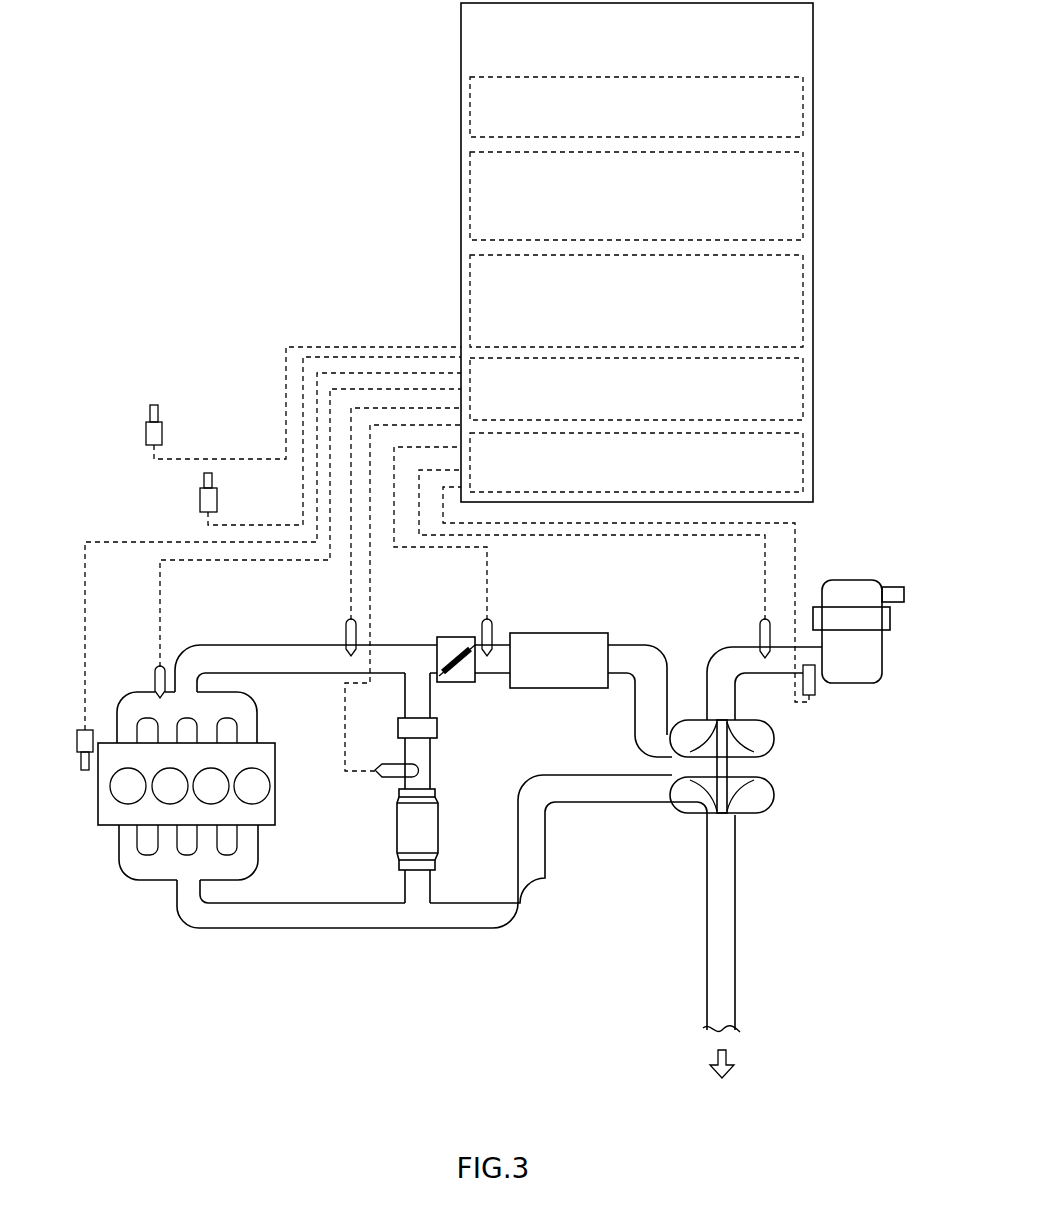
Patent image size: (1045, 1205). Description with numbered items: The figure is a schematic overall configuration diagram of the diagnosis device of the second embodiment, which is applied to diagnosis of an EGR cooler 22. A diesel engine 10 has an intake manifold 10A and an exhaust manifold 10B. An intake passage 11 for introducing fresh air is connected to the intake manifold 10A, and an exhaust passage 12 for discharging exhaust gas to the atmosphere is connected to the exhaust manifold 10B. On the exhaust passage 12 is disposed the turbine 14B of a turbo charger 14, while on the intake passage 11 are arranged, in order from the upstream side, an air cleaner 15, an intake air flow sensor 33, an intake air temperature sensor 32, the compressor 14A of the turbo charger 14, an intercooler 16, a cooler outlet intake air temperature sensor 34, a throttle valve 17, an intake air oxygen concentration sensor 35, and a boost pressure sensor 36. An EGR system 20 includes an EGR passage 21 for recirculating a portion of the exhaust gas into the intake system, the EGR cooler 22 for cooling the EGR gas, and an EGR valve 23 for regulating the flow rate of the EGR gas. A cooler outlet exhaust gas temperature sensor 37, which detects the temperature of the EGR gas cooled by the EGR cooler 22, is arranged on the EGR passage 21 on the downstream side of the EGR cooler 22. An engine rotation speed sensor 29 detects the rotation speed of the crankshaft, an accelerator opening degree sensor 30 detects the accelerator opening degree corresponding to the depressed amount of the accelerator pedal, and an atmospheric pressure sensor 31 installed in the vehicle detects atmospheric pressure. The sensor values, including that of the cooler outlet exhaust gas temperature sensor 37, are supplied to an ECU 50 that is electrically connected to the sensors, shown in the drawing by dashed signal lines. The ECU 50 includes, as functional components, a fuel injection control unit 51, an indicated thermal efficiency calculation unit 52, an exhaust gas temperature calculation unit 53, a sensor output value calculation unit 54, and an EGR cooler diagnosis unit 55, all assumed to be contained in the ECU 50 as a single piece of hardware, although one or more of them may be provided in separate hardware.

The diesel engine 10 is at (275, 770).
The intake manifold 10A is at (258, 718).
The exhaust manifold 10B is at (155, 882).
The intake passage 11 is at (258, 645).
The exhaust passage 12 is at (318, 928).
The turbo charger 14 is at (791, 774).
The compressor 14A is at (750, 745).
The turbine 14B is at (748, 800).
The air cleaner 15 is at (852, 582).
The intercooler 16 is at (565, 633).
The throttle valve 17 is at (450, 637).
The EGR system 20 is at (460, 766).
The EGR passage 21 is at (405, 882).
The EGR cooler 22 is at (397, 838).
The EGR valve 23 is at (398, 728).
The engine rotation speed sensor 29 is at (85, 770).
The accelerator opening degree sensor 30 is at (146, 430).
The atmospheric pressure sensor 31 is at (200, 497).
The intake air temperature sensor 32 is at (761, 640).
The intake air flow sensor 33 is at (815, 690).
The cooler outlet intake air temperature sensor 34 is at (492, 635).
The intake air oxygen concentration sensor 35 is at (348, 630).
The boost pressure sensor 36 is at (157, 680).
The cooler outlet exhaust gas temperature sensor 37 is at (395, 777).
The ECU 50 is at (813, 48).
The fuel injection control unit 51 is at (803, 107).
The indicated thermal efficiency calculation unit 52 is at (803, 197).
The exhaust gas temperature calculation unit 53 is at (803, 303).
The sensor output value calculation unit 54 is at (803, 390).
The EGR cooler diagnosis unit 55 is at (803, 460).